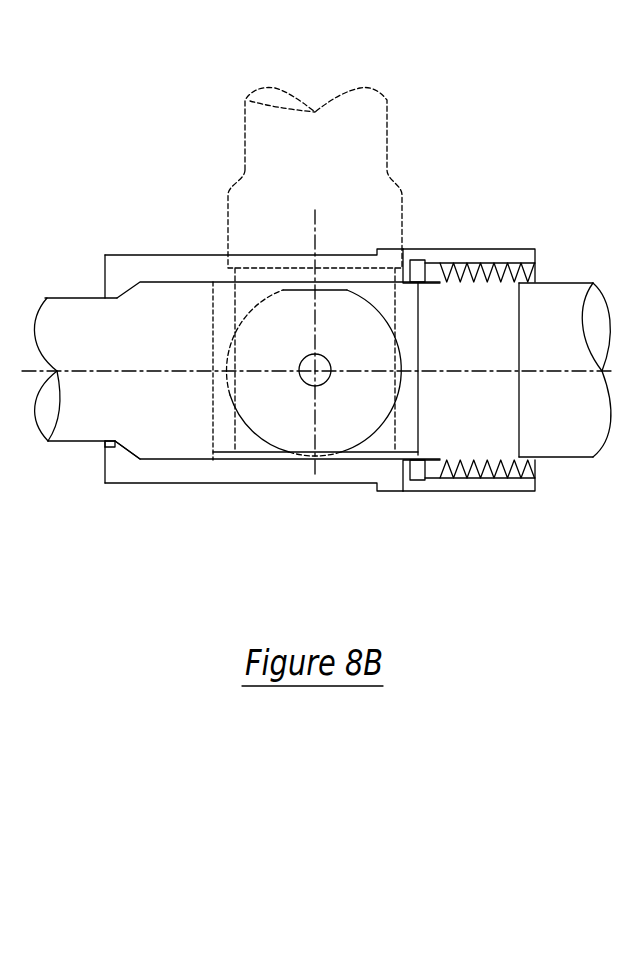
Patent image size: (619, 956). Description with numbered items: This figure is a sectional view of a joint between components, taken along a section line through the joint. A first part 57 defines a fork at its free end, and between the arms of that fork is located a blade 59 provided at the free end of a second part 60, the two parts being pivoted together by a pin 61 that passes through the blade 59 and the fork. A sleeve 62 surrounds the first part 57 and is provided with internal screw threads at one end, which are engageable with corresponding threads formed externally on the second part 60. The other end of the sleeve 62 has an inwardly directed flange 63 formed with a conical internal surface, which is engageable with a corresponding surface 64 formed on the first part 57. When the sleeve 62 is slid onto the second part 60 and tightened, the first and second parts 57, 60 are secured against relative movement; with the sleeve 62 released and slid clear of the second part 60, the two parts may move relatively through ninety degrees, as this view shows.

The first part 57 is at (300, 158).
The blade 59 is at (387, 440).
The second part 60 is at (560, 310).
The pin 61 is at (318, 373).
The sleeve 62 is at (470, 255).
The inwardly directed flange 63 is at (128, 450).
The corresponding surface 64 is at (115, 445).